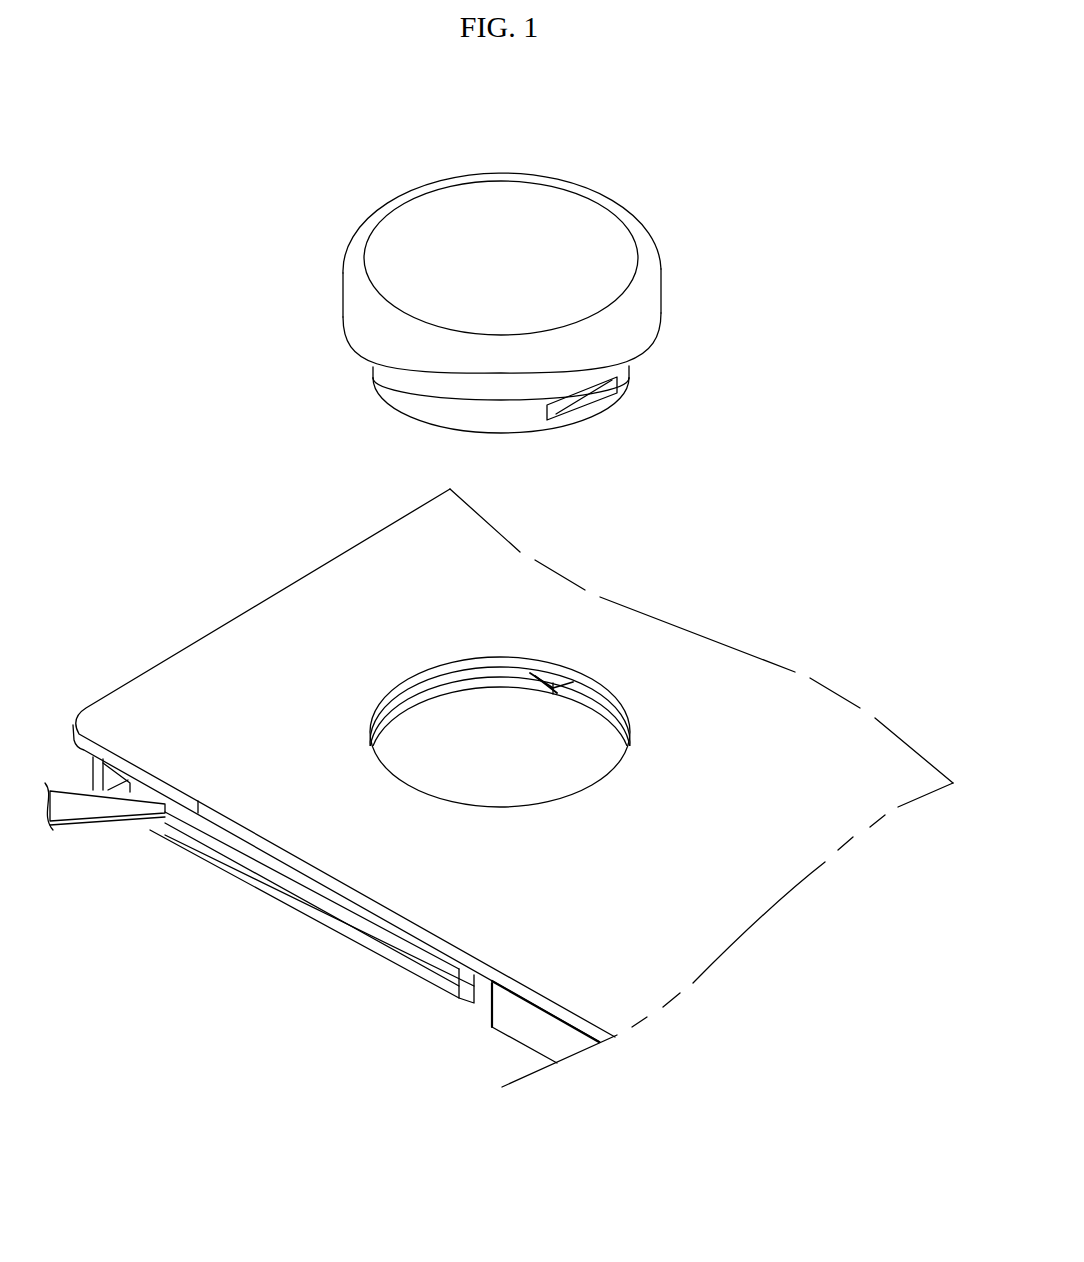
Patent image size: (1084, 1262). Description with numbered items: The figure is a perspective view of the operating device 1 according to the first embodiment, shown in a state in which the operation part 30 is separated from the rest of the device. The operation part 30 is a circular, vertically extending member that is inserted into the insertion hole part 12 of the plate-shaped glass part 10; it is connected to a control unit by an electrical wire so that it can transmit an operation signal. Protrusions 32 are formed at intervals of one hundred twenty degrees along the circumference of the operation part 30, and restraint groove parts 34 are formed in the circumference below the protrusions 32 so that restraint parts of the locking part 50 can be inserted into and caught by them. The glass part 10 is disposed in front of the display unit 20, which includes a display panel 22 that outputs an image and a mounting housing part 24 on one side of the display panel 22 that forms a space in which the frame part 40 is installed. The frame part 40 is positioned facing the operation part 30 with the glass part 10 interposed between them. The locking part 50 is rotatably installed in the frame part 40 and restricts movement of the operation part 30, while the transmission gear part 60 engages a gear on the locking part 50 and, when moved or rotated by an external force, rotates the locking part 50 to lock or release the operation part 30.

The operating device 1 is at (684, 179).
The glass part 10 is at (290, 637).
The insertion hole part 12 is at (432, 708).
The display unit 20 is at (418, 1102).
The display panel 22 is at (540, 1035).
The mounting housing part 24 is at (383, 967).
The operation part 30 is at (671, 258).
The protrusions 32 is at (621, 320).
The restraint groove parts 34 is at (597, 393).
The frame part 40 is at (297, 895).
The locking part 50 is at (555, 696).
The transmission gear part 60 is at (89, 840).